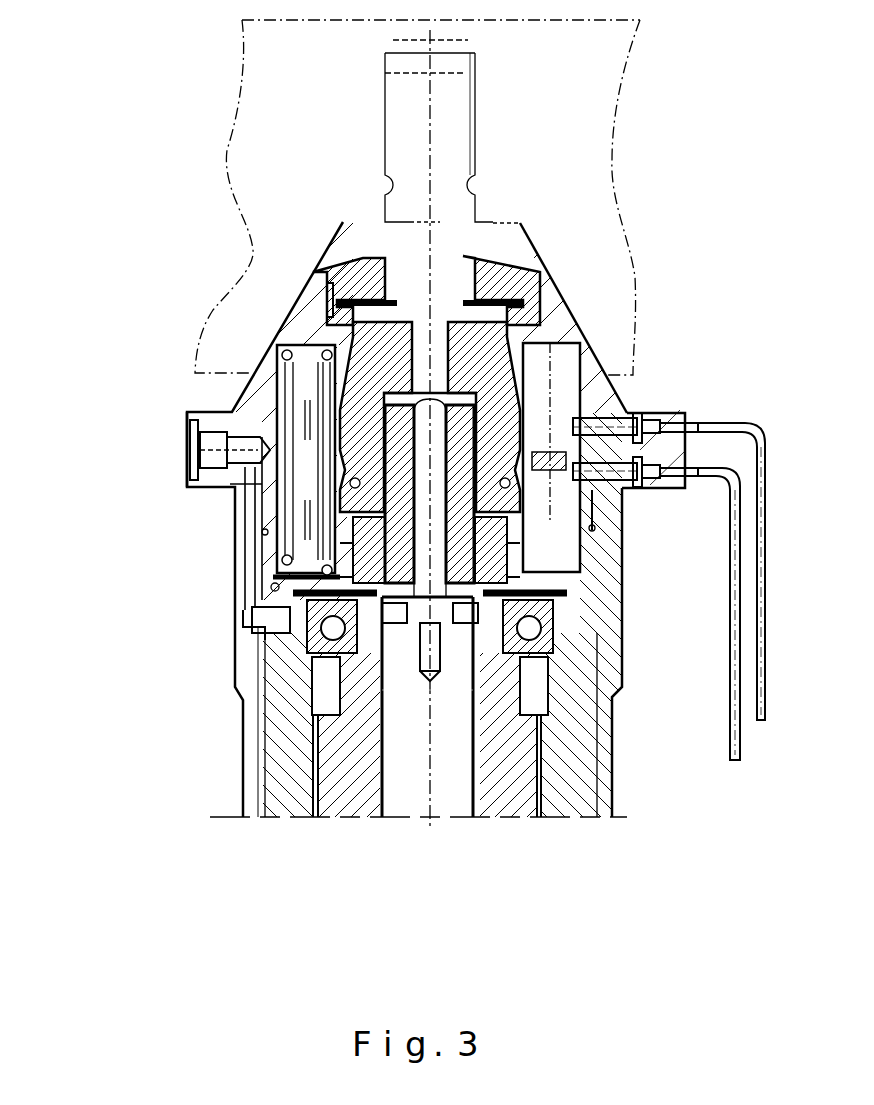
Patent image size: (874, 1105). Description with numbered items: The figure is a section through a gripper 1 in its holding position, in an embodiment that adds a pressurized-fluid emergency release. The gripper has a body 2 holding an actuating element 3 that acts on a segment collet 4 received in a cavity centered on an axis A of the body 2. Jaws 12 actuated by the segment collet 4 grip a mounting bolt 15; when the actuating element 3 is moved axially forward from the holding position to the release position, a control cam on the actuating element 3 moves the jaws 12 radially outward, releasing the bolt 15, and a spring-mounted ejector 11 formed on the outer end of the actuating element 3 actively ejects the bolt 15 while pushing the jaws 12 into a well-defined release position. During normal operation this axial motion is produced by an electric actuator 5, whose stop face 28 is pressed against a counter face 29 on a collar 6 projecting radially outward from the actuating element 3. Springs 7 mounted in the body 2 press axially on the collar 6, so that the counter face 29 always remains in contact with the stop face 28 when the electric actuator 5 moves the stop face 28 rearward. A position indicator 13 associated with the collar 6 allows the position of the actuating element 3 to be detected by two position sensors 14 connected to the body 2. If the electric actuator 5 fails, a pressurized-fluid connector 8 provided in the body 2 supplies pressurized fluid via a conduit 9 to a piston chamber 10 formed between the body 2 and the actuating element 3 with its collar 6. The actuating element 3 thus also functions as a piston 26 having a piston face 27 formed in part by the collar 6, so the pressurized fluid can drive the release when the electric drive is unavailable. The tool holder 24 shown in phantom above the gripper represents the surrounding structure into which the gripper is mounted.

The gripper 1 is at (188, 756).
The body 2 is at (253, 707).
The actuating element 3 is at (345, 508).
The segment collet 4 is at (320, 375).
The electric actuator 5 is at (350, 785).
The collar 6 is at (275, 598).
The piston 26 is at (271, 620).
The springs 7 is at (300, 455).
The pressurized-fluid connector 8 is at (183, 462).
The conduit 9 is at (270, 570).
The piston chamber 10 is at (250, 620).
The ejector 11 is at (500, 360).
The jaws 12 is at (325, 297).
The position indicator 13 is at (590, 500).
The position sensors 14 is at (653, 410).
The mounting bolt 15 is at (440, 238).
The tool holder (phantom) 24 is at (262, 104).
The piston face 27 is at (247, 793).
The stop face 28 is at (460, 692).
The counter face 29 is at (597, 757).
The axis A is at (432, 133).